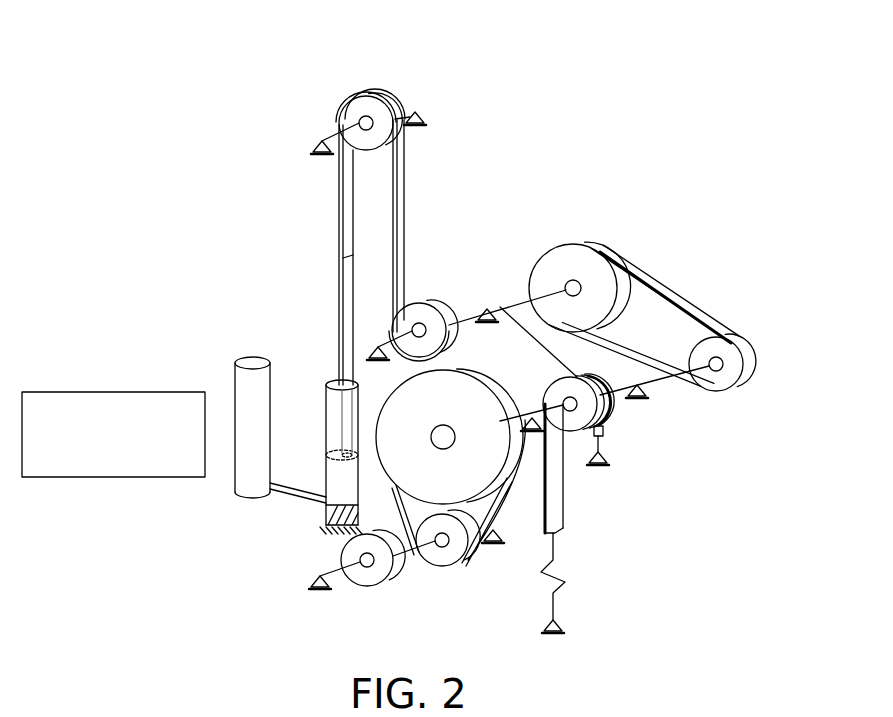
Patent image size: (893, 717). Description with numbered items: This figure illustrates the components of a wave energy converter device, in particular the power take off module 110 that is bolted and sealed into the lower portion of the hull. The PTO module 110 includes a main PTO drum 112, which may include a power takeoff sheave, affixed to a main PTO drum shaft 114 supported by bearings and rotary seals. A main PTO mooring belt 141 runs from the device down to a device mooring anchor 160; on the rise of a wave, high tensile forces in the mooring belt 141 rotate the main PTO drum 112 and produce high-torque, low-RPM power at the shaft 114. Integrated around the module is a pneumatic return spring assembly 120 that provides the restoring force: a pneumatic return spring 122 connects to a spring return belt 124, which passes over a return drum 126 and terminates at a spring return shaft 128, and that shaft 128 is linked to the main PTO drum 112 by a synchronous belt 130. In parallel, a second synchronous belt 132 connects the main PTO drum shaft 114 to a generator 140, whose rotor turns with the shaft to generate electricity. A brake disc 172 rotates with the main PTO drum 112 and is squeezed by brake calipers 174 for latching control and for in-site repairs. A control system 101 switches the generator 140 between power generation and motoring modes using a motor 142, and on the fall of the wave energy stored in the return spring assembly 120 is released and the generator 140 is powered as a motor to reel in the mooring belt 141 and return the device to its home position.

The control system 101 is at (113, 434).
The power take off module 110 is at (297, 336).
The main PTO drum 112 is at (607, 422).
The main PTO drum shaft 114 is at (662, 367).
The pneumatic return spring assembly 120 is at (466, 250).
The pneumatic return spring 122 is at (322, 212).
The spring return belt 124 is at (385, 207).
The return drum 126 is at (413, 319).
The spring return shaft 128 is at (511, 292).
The synchronous belt 130 is at (540, 333).
The second synchronous belt 132 is at (681, 272).
The generator 140 is at (528, 482).
The main PTO mooring belt 141 is at (577, 533).
The motor 142 is at (433, 445).
The device mooring anchor 160 is at (573, 622).
The brake disc 172 is at (617, 408).
The brake calipers 174 is at (604, 438).